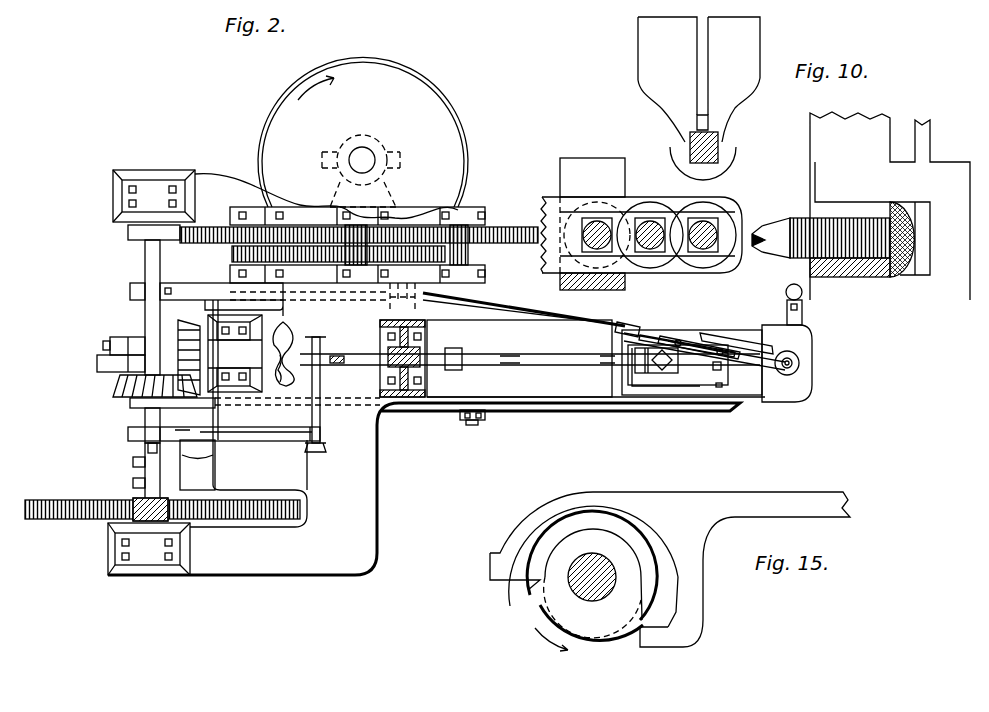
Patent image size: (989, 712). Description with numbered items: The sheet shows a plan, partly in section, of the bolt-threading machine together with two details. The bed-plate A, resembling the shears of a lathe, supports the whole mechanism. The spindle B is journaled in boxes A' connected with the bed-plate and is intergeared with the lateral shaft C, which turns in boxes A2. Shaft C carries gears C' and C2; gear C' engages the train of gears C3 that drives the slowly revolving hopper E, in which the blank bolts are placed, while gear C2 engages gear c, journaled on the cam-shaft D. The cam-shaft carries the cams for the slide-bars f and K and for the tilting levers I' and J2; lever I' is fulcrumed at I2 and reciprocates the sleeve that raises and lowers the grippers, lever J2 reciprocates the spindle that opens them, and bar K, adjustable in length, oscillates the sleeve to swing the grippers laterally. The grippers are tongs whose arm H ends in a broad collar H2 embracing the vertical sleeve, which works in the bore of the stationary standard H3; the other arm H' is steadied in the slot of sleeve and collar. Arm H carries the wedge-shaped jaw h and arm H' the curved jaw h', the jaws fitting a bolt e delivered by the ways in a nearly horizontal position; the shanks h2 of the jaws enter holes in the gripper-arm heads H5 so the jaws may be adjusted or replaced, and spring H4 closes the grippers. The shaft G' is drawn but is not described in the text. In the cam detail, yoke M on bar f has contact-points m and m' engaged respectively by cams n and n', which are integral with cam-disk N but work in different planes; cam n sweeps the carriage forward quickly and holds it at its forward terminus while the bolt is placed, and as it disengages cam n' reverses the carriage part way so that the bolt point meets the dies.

In FIG. 2, the hopper E is at (356, 95).
In FIG. 2, the boxes A2 is at (151, 372).
In FIG. 2, the gear C' is at (154, 364).
In FIG. 2, the lateral shaft C is at (152, 307).
In FIG. 2, the train of gears C3 is at (225, 257).
In FIG. 2, the gear C2 is at (365, 245).
In FIG. 2, the tilting lever J2 is at (128, 283).
In FIG. 2, the sliding bar K is at (107, 338).
In FIG. 2, the slide-bar f is at (90, 364).
In FIG. 2, the boxes A' is at (330, 356).
In FIG. 2, the spindle B is at (280, 344).
In FIG. 2, the gear c is at (162, 514).
In FIG. 2, the tilting lever I' is at (588, 422).
In FIG. 2, the fulcrum I2 is at (472, 422).
In FIG. 2, the shaft G' is at (530, 354).
In FIG. 2, the bed-plate A is at (596, 358).
In FIG. 2, the gripper arm H is at (703, 362).
In FIG. 2, the jaw h is at (653, 332).
In FIG. 10, the jaw h is at (667, 79).
In FIG. 2, the jaw h' is at (620, 313).
In FIG. 10, the jaw h' is at (734, 79).
In FIG. 2, the shanks h2 is at (667, 334).
In FIG. 2, the gripper-arm heads H5 is at (694, 332).
In FIG. 2, the spring H4 is at (734, 335).
In FIG. 2, the gripper arm H' is at (762, 343).
In FIG. 2, the collar H2 is at (800, 372).
In FIG. 2, the stationary standard H3 is at (801, 382).
In FIG. 10, the bolt e is at (755, 206).
In FIG. 15, the yoke M is at (670, 569).
In FIG. 15, the cam-disk N is at (591, 585).
In FIG. 15, the cam-shaft D is at (592, 577).
In FIG. 15, the cam n' is at (649, 545).
In FIG. 15, the contact-point m' is at (525, 595).
In FIG. 15, the cam n is at (564, 645).
In FIG. 15, the contact-point m is at (629, 646).